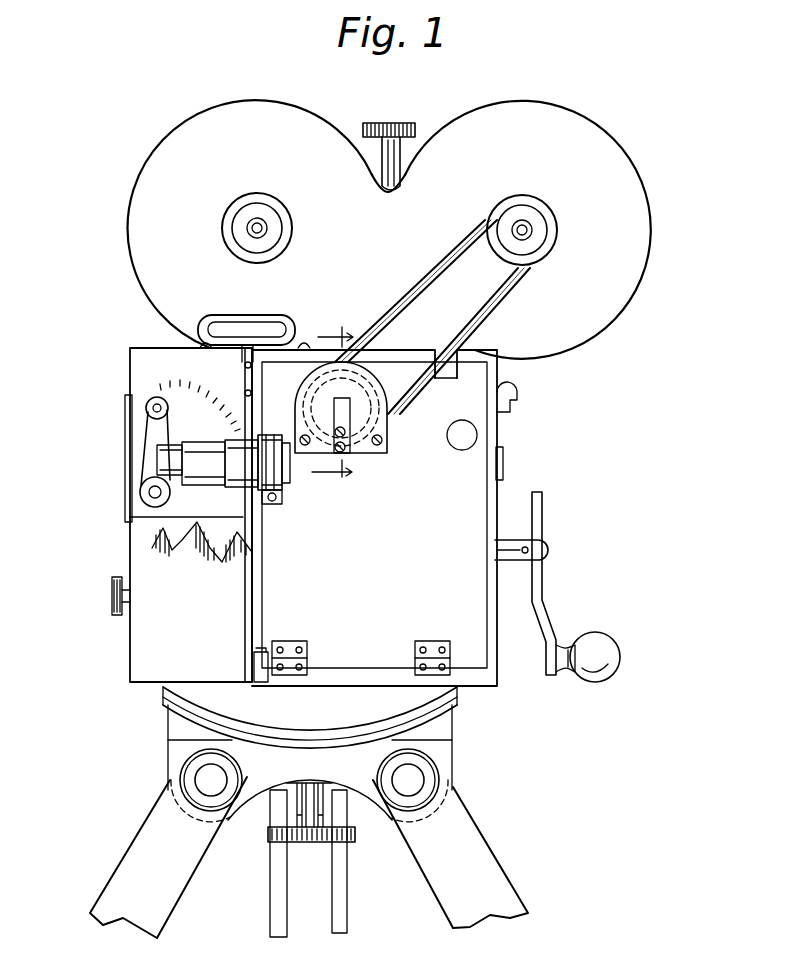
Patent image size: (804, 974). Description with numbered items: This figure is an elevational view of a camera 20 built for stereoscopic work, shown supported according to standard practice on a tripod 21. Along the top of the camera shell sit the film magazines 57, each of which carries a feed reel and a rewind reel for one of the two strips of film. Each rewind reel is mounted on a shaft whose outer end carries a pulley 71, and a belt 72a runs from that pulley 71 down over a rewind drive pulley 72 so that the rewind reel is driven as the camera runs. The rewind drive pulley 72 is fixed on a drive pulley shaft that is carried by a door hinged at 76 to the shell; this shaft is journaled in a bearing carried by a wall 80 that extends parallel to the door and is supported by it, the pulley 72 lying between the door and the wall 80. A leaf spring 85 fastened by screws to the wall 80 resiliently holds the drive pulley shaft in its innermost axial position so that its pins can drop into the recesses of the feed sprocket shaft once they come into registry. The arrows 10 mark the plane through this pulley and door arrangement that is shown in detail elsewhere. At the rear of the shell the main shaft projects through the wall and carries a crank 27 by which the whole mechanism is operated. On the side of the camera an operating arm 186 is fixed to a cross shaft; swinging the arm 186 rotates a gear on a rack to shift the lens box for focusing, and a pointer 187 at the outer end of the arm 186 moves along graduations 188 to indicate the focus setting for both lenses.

The film magazine 57 is at (210, 128).
The pulley 71 is at (272, 201).
The belt 72a is at (403, 294).
The rewind drive pulley 72 is at (308, 402).
The wall 80 is at (377, 453).
The leaf spring 85 is at (350, 418).
The section line 10 is at (332, 408).
The camera 20 is at (480, 518).
The crank 27 is at (538, 585).
The hinge 76 is at (325, 643).
The operating arm 186 is at (157, 430).
The pointer 187 is at (155, 396).
The graduations 188 is at (222, 383).
The tripod 21 is at (458, 813).